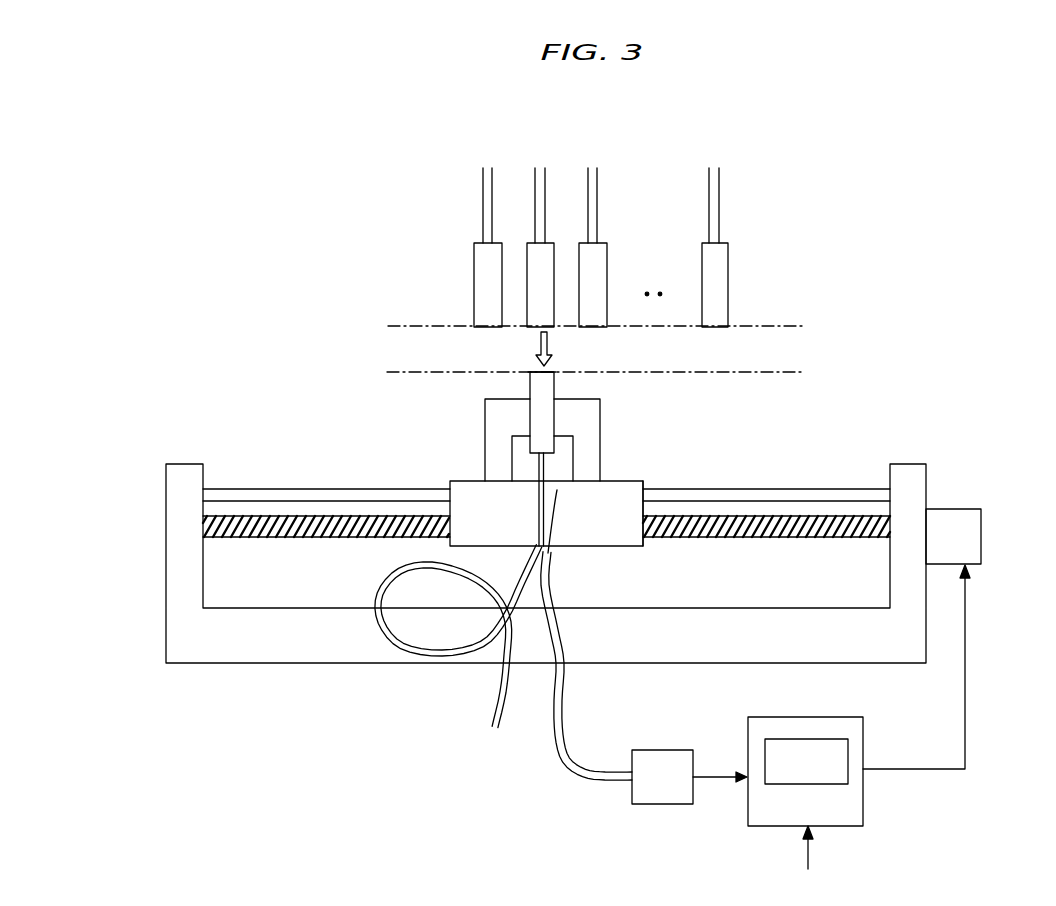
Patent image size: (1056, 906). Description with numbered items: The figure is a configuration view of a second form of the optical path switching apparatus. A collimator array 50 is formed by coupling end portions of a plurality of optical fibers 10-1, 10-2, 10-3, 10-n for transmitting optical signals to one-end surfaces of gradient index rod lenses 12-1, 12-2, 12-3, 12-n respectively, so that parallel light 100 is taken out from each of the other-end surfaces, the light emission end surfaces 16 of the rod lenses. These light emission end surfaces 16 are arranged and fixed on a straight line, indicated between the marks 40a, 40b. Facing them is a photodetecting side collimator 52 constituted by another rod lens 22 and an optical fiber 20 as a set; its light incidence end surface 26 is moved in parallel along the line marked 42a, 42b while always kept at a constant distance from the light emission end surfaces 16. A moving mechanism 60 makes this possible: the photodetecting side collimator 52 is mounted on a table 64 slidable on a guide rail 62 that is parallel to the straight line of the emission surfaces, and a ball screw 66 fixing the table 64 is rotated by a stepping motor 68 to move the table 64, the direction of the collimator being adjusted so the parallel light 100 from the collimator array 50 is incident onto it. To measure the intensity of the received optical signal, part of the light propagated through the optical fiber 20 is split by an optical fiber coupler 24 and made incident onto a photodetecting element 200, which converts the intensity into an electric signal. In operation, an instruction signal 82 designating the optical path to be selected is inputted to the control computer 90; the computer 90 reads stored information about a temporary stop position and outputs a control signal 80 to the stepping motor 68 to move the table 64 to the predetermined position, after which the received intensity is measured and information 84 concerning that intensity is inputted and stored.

The optical fiber 10-1 is at (485, 192).
The optical fiber 10-2 is at (538, 192).
The optical fiber 10-3 is at (593, 192).
The optical fiber 10-n is at (715, 192).
The gradient index rod lens 12-1 is at (480, 257).
The gradient index rod lens 12-2 is at (536, 303).
The gradient index rod lens 12-3 is at (600, 260).
The gradient index rod lens 12-n is at (721, 260).
The light emission end surface 16 is at (552, 328).
The optical fiber 20 is at (532, 573).
The rod lens 22 is at (549, 388).
The optical fiber coupler 24 is at (598, 539).
The light incidence end surface 26 is at (530, 372).
The straight line 40a is at (571, 327).
The straight line 40b is at (837, 327).
The scanning line 42a is at (570, 373).
The scanning line 42b is at (835, 373).
The collimator array 50 is at (818, 287).
The photodetecting side collimator 52 is at (620, 450).
The moving mechanism 60 is at (808, 475).
The guide rail 62 is at (329, 491).
The table 64 is at (475, 487).
The ball screw 66 is at (338, 539).
The stepping motor 68 is at (977, 519).
The control signal 80 is at (966, 676).
The instruction signal 82 is at (811, 865).
The information concerning the intensity of the optical signal 84 is at (718, 783).
The control computer 90 is at (859, 805).
The parallel light 100 is at (538, 345).
The photodetecting element 200 is at (660, 799).